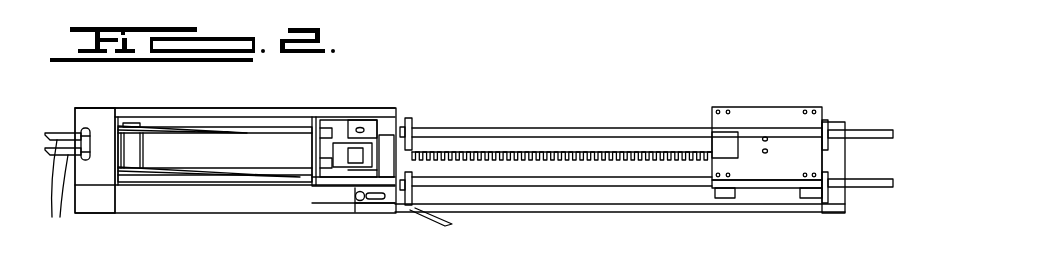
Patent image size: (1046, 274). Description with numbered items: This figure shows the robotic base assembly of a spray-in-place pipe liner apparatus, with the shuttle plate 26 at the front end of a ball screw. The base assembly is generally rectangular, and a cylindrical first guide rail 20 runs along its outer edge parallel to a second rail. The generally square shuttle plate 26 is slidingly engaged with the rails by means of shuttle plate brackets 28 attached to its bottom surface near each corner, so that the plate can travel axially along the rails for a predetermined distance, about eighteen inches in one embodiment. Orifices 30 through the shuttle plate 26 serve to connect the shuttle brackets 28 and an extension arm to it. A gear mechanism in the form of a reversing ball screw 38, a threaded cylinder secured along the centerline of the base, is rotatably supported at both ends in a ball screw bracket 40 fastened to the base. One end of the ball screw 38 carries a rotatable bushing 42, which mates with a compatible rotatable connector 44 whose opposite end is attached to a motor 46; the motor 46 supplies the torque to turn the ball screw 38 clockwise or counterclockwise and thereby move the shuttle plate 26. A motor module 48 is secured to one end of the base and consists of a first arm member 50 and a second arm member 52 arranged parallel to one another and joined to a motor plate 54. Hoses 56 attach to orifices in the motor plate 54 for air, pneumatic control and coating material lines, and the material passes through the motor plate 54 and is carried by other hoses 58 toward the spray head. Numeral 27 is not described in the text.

The first guide rail 20 is at (567, 128).
The shuttle plate 26 is at (757, 118).
The lower rod 27 is at (655, 185).
The shuttle plate brackets 28 is at (808, 197).
The orifices 30 is at (805, 113).
The reversing ball screw 38 is at (495, 152).
The ball screw bracket 40 is at (393, 143).
The bushing 42 is at (363, 150).
The rotatable connector 44 is at (340, 162).
The motor 46 is at (247, 153).
The motor module 48 is at (143, 214).
The first arm member 50 is at (245, 110).
The second arm member 52 is at (287, 205).
The motor plate 54 is at (97, 117).
The hoses 56 is at (58, 192).
The other hoses 58 is at (163, 128).